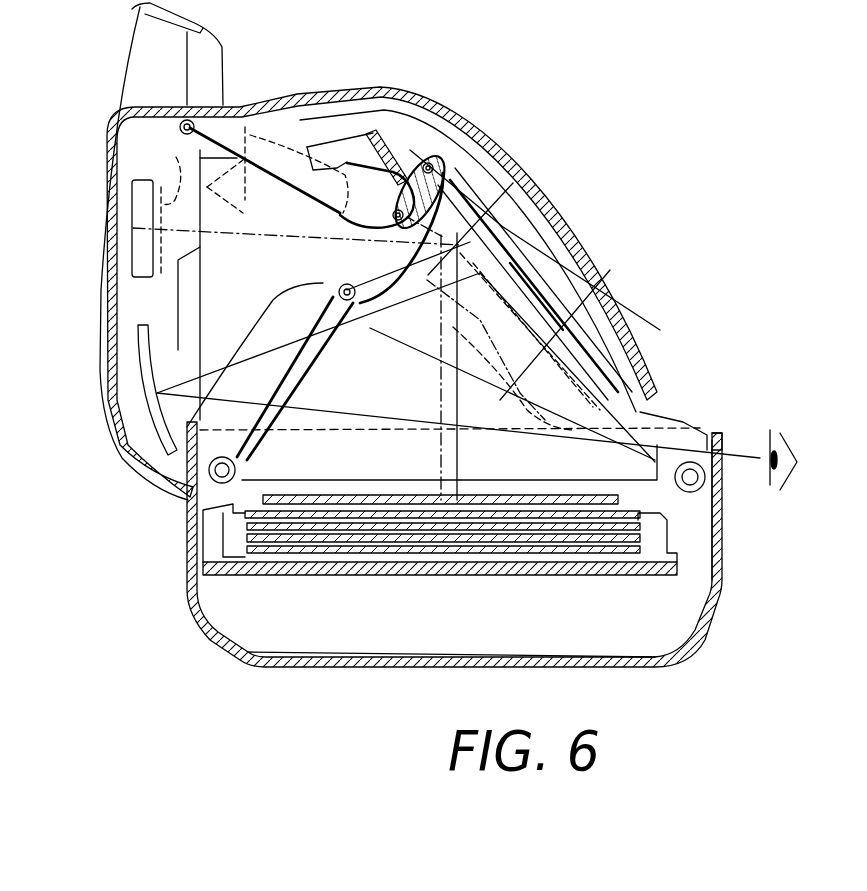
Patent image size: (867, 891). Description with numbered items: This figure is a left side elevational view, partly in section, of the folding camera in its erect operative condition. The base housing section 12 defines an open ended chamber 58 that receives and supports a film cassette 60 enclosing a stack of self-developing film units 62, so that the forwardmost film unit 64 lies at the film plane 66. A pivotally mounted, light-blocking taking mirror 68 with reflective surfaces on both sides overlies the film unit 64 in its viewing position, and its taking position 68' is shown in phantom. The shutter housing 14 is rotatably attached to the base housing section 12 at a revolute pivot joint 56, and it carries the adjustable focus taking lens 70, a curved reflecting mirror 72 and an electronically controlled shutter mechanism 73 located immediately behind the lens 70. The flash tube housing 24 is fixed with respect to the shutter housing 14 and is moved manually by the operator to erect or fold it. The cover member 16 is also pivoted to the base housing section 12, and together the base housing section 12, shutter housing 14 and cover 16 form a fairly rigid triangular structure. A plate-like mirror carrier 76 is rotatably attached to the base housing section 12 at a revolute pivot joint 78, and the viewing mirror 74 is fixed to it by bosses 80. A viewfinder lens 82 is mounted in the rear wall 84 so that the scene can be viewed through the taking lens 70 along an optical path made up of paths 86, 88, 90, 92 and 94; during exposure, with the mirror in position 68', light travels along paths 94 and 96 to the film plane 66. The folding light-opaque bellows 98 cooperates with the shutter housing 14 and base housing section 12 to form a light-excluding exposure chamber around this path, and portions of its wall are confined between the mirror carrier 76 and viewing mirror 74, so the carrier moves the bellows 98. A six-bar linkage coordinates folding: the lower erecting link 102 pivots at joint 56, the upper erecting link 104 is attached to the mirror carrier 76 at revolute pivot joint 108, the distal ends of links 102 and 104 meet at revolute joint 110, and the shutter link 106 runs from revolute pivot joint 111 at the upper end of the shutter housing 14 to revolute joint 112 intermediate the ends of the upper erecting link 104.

The base housing section 12 is at (197, 605).
The shutter housing 14 is at (113, 433).
The cover member 16 is at (410, 92).
The flash tube housing 24 is at (130, 48).
The revolute pivot joint 56 is at (200, 483).
The open ended chamber 58 is at (243, 623).
The film cassette 60 is at (670, 535).
The self-developing film units 62 is at (237, 533).
The forwardmost film unit 64 is at (320, 500).
The film plane 66 is at (583, 507).
The taking mirror 68 is at (443, 498).
The taking position of taking mirror 68' is at (354, 121).
The taking lens 70 is at (133, 200).
The curved reflecting mirror 72 is at (137, 352).
The shutter mechanism 73 is at (177, 160).
The viewing mirror 74 is at (560, 240).
The mirror carrier 76 is at (460, 197).
The revolute pivot joint 78 is at (723, 500).
The bosses 80 is at (513, 183).
The viewfinder lens 82 is at (723, 450).
The rear wall 84 is at (727, 522).
The optical path 86 is at (323, 410).
The optical path 88 is at (260, 368).
The optical path 90 is at (513, 357).
The optical path 92 is at (501, 366).
The optical path 94 is at (263, 233).
The optical path 96 is at (433, 403).
The bellows 98 is at (230, 288).
The lower erecting link 102 is at (290, 327).
The upper erecting link 104 is at (410, 167).
The shutter link 106 is at (253, 127).
The revolute pivot joint 108 is at (432, 163).
The revolute joint 110 is at (342, 285).
The revolute pivot joint 111 is at (186, 120).
The revolute joint 112 is at (373, 200).